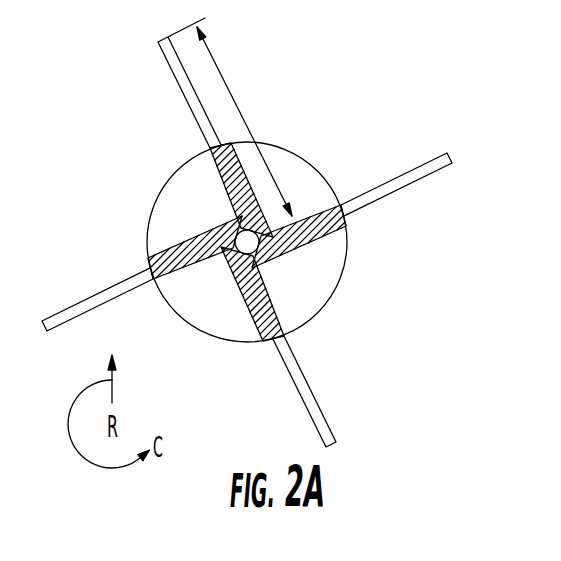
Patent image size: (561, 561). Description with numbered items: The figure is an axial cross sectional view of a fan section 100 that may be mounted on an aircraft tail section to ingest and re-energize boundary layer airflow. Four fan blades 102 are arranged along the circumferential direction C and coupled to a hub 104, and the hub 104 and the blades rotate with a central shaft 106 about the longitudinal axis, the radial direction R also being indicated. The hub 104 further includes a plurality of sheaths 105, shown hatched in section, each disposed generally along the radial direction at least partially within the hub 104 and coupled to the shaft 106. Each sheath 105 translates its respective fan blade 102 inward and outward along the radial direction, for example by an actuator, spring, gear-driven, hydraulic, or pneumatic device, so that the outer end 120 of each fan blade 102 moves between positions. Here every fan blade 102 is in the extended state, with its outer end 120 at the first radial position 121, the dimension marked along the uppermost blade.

The fan section 100 is at (265, 223).
The fan blade 102 is at (186, 82).
The hub 104 is at (347, 258).
The sheath 105 is at (276, 308).
The shaft 106 is at (241, 235).
The outer end 120 is at (453, 154).
The first radial position 121 is at (230, 93).